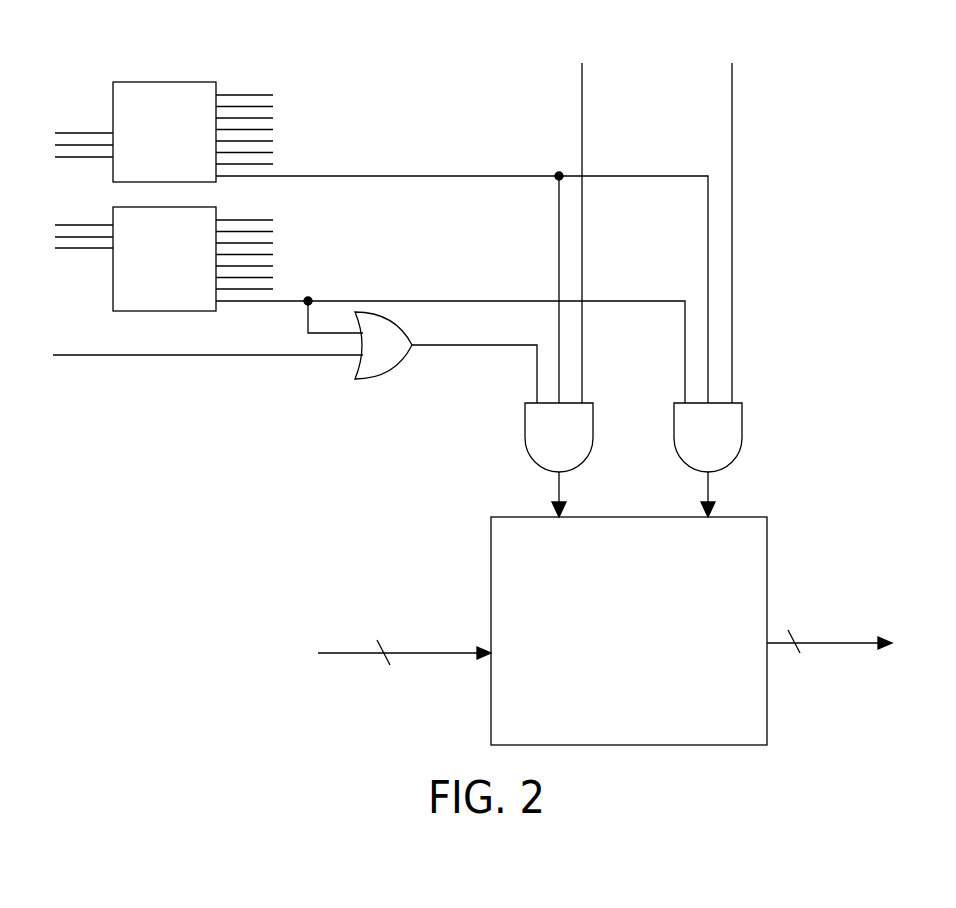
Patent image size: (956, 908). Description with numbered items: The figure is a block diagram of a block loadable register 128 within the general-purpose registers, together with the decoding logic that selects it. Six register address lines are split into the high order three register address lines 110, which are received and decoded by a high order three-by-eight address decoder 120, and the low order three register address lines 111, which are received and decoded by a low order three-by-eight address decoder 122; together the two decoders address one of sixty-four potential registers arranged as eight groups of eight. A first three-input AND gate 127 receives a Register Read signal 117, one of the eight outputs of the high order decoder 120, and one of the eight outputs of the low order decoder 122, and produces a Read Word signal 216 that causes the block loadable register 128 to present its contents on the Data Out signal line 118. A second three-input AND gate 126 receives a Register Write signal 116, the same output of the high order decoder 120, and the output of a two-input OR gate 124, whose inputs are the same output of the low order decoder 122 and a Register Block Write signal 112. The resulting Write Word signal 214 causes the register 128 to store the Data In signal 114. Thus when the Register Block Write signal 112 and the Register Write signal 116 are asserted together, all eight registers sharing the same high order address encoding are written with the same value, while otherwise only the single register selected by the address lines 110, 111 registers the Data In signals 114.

The high order register address lines 110 is at (102, 132).
The low order register address lines 111 is at (102, 249).
The Register Block Write signal 112 is at (275, 356).
The Data In signal 114 is at (433, 655).
The Register Write signal 116 is at (582, 105).
The Register Read signal 117 is at (732, 96).
The Data Out signal line 118 is at (857, 645).
The high order 3×8 address decoder 120 is at (205, 82).
The low order 3×8 address decoder 122 is at (205, 207).
The two-input OR gate 124 is at (398, 368).
The second three-input AND gate 126 is at (524, 438).
The first three-input AND gate 127 is at (743, 428).
The block loadable register 128 is at (767, 562).
The Write Word signal 214 is at (557, 495).
The Read Word signal 216 is at (710, 495).